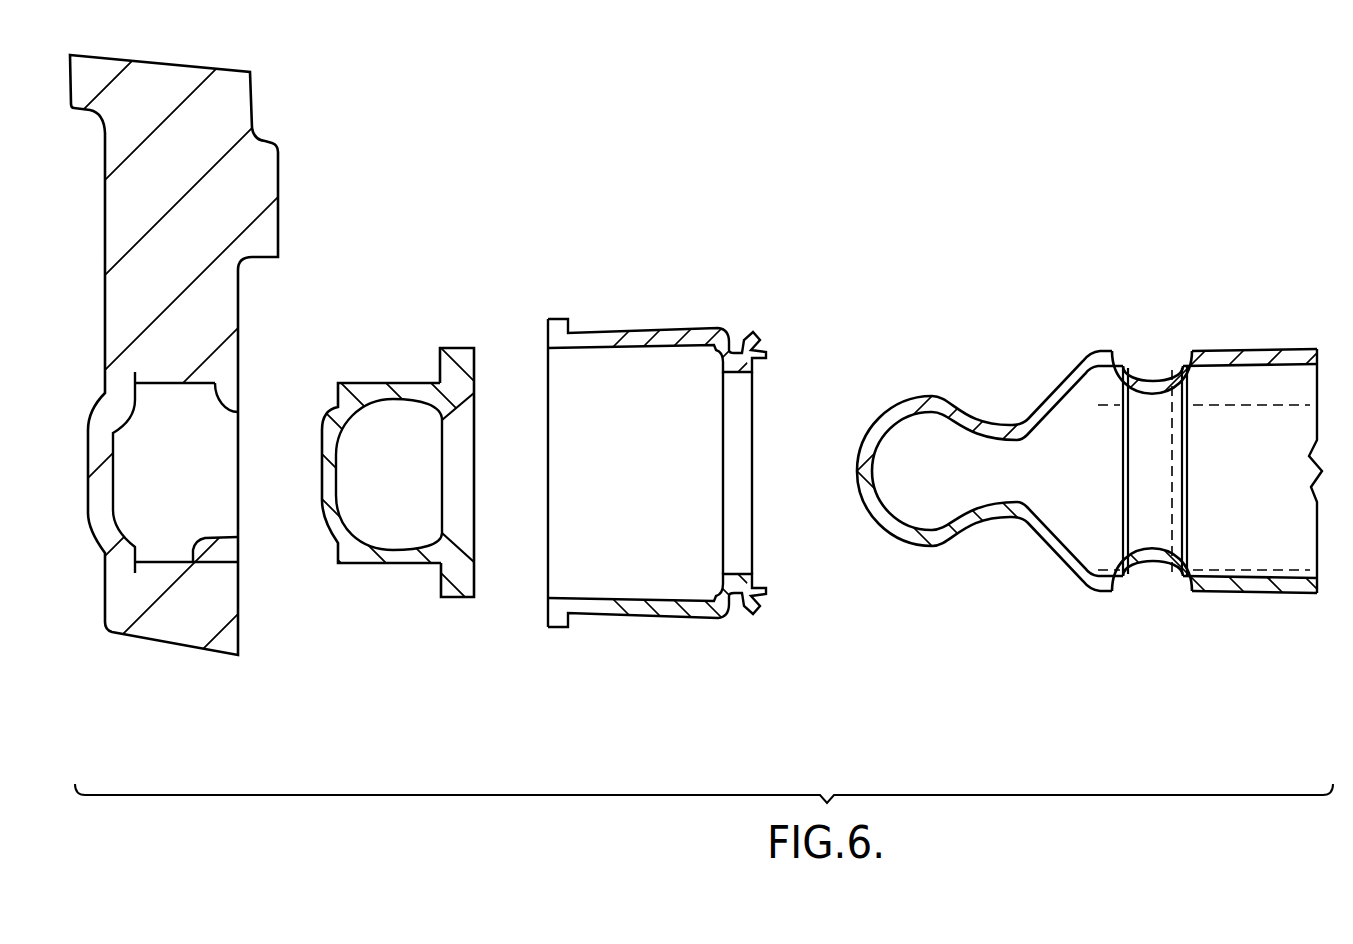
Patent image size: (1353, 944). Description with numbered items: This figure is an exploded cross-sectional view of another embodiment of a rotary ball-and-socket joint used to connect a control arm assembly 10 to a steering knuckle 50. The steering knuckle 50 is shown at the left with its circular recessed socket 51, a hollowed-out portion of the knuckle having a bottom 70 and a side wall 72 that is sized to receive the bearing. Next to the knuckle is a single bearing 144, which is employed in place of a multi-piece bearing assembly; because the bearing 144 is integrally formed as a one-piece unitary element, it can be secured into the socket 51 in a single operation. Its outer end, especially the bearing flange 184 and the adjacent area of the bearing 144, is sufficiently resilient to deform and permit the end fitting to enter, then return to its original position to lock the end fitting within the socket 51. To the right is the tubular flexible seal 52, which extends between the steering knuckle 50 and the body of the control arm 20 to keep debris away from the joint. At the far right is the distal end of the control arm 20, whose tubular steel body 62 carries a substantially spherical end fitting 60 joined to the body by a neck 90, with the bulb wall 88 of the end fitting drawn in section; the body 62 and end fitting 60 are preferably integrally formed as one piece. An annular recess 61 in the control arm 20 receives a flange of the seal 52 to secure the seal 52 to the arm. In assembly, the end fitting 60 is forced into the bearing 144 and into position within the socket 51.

The control arm assembly 10 is at (971, 471).
The control arm 20 is at (1237, 594).
The steering knuckle 50 is at (426, 350).
The socket 51 is at (240, 412).
The seal 52 is at (652, 612).
The end fitting 60 is at (908, 397).
The annular recess 61 is at (1158, 358).
The tubular steel body 62 is at (1257, 348).
The bottom 70 is at (120, 465).
The side wall 72 is at (238, 538).
The bulb wall 88 is at (857, 478).
The neck 90 is at (997, 425).
The bearing 144 is at (372, 383).
The bearing flange 184 is at (443, 348).